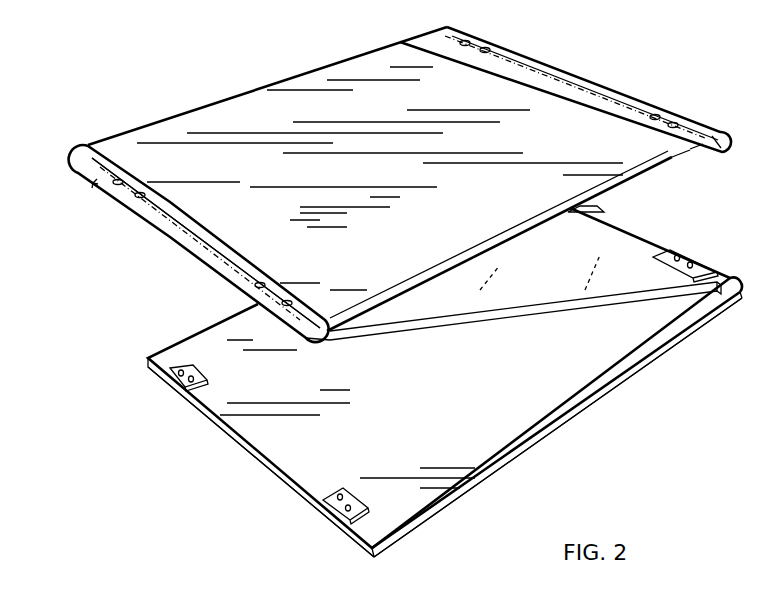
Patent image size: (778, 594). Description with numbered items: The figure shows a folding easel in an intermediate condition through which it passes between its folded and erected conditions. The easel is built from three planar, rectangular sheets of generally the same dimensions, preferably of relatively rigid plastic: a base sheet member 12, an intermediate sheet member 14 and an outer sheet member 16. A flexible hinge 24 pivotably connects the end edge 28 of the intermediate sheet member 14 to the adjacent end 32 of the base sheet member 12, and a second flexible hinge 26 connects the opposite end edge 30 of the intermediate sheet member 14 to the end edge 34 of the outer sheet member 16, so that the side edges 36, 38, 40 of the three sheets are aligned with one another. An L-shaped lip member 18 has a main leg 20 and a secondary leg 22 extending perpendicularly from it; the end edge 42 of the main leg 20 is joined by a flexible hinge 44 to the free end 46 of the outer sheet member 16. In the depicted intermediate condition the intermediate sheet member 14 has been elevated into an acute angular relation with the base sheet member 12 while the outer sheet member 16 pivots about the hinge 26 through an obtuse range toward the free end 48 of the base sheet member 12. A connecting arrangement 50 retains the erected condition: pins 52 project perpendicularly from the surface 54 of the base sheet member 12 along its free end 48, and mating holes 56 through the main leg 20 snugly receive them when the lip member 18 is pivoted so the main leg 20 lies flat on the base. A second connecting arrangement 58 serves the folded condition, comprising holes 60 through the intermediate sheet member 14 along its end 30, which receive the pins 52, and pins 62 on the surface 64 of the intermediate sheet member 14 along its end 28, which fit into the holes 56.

The base sheet member 12 is at (440, 505).
The intermediate sheet member 14 is at (410, 328).
The outer sheet member 16 is at (247, 92).
The lip member 18 is at (568, 73).
The main leg 20 is at (702, 146).
The secondary leg 22 is at (738, 124).
The flexible hinge 24 is at (740, 303).
The flexible hinge 26 is at (185, 245).
The end edge of intermediate sheet member 28 is at (642, 233).
The end edge of intermediate sheet member 30 is at (340, 328).
The end of base sheet member 32 is at (688, 330).
The end edge of outer sheet member 34 is at (180, 200).
The side edge of base sheet member 36 is at (480, 255).
The side edge of intermediate sheet member 38 is at (483, 320).
The side edge of outer sheet member 40 is at (577, 407).
The end edge of main leg 42 is at (525, 78).
The flexible hinge 44 is at (686, 160).
The free end of outer sheet member 46 is at (400, 42).
The free end of base sheet member 48 is at (230, 437).
The connecting arrangement 50 is at (672, 110).
The pins 52 is at (198, 392).
The surface of base sheet member 54 is at (379, 455).
The mating holes 56 is at (485, 50).
The connecting arrangement 58 is at (93, 183).
The holes 60 is at (125, 150).
The pins 62 is at (698, 262).
The surface of intermediate sheet member 64 is at (551, 284).